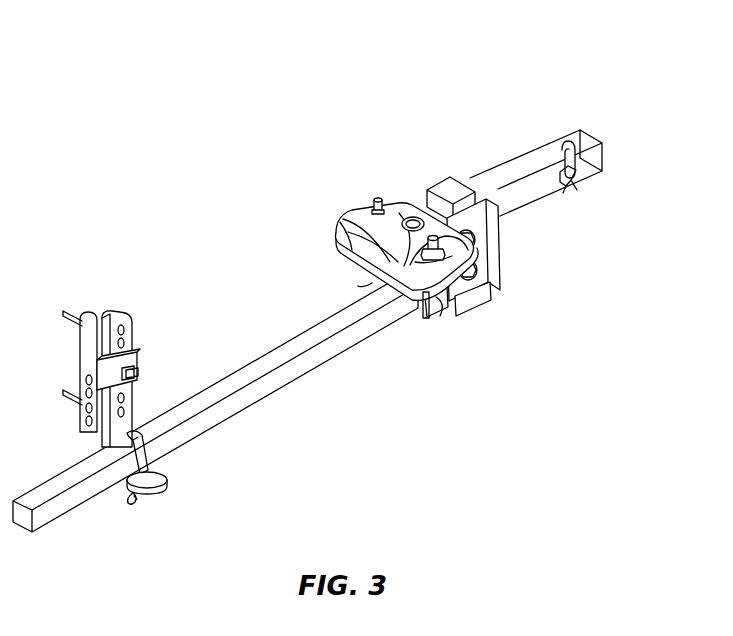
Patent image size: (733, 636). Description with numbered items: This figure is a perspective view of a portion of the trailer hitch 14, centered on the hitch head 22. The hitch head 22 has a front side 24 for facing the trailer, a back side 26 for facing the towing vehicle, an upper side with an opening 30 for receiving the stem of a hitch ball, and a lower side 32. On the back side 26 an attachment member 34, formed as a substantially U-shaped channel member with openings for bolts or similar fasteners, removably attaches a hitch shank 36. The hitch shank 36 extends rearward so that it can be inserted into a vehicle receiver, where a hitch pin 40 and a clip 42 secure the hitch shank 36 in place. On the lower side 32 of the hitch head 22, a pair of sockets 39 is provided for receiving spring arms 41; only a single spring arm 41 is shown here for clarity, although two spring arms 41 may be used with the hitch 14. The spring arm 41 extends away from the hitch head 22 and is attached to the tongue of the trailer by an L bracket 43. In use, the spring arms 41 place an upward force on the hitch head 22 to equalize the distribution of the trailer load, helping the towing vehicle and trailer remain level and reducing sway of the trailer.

The hitch 14 is at (376, 148).
The hitch head 22 is at (345, 212).
The front side 24 is at (336, 234).
The back side 26 is at (475, 248).
The opening 30 is at (412, 217).
The lower side 32 is at (378, 281).
The attachment member 34 is at (488, 232).
The hitch shank 36 is at (580, 128).
The sockets 39 is at (430, 312).
The hitch pin 40 is at (580, 181).
The spring arm 41 is at (250, 398).
The clip 42 is at (575, 150).
The "L" bracket 43 is at (115, 312).